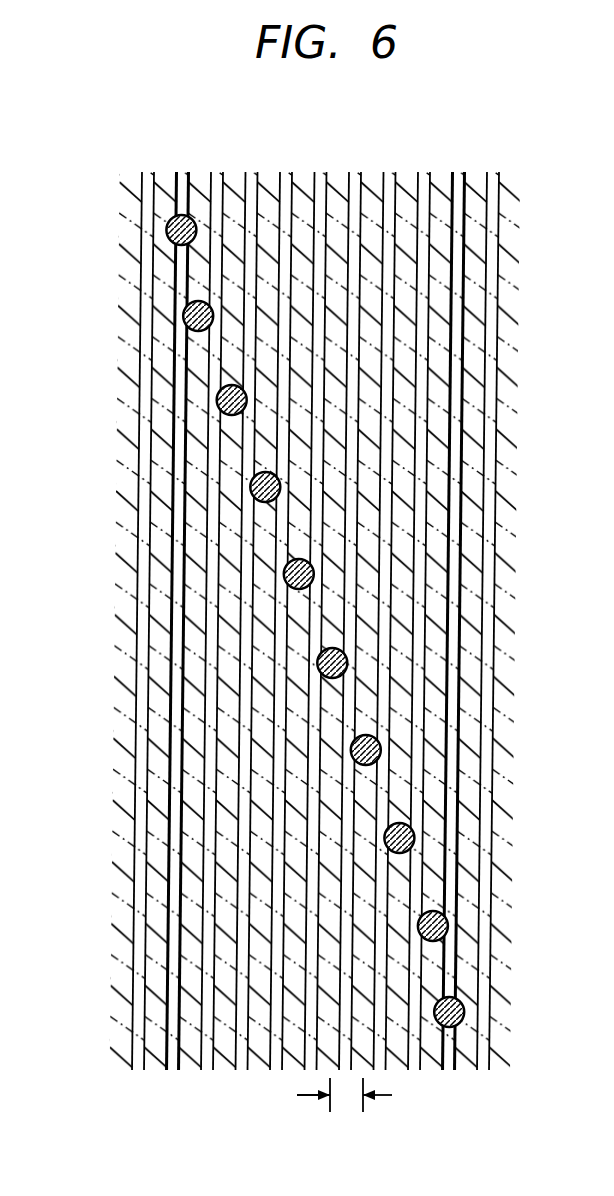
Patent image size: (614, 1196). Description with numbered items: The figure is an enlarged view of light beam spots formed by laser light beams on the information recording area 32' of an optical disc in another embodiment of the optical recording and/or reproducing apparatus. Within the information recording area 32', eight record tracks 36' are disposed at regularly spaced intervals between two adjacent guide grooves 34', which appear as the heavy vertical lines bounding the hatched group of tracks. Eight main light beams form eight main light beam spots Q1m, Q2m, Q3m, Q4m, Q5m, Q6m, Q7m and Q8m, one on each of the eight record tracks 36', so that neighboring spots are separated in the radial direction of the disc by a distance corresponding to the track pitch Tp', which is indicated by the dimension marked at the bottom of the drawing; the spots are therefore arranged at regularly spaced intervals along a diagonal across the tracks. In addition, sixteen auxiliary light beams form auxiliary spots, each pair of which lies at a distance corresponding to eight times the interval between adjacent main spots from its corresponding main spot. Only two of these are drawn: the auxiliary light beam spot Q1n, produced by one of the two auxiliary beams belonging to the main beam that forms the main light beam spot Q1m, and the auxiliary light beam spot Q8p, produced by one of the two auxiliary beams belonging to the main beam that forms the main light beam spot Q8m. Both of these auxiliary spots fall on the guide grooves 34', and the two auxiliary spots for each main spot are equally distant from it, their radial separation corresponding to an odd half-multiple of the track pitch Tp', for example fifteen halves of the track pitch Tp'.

The information recording area 32' is at (347, 591).
The guide grooves 34' is at (310, 591).
The record tracks 36' is at (315, 591).
The auxiliary light beam spot Q8p is at (166, 230).
The main light beam spot Q1m is at (183, 316).
The main light beam spot Q2m is at (216, 400).
The main light beam spot Q3m is at (250, 487).
The main light beam spot Q4m is at (283, 574).
The main light beam spot Q5m is at (348, 663).
The main light beam spot Q6m is at (381, 750).
The main light beam spot Q7m is at (415, 838).
The main light beam spot Q8m is at (448, 926).
The auxiliary light beam spot Q1n is at (465, 1012).
The track pitch Tp' is at (353, 1117).